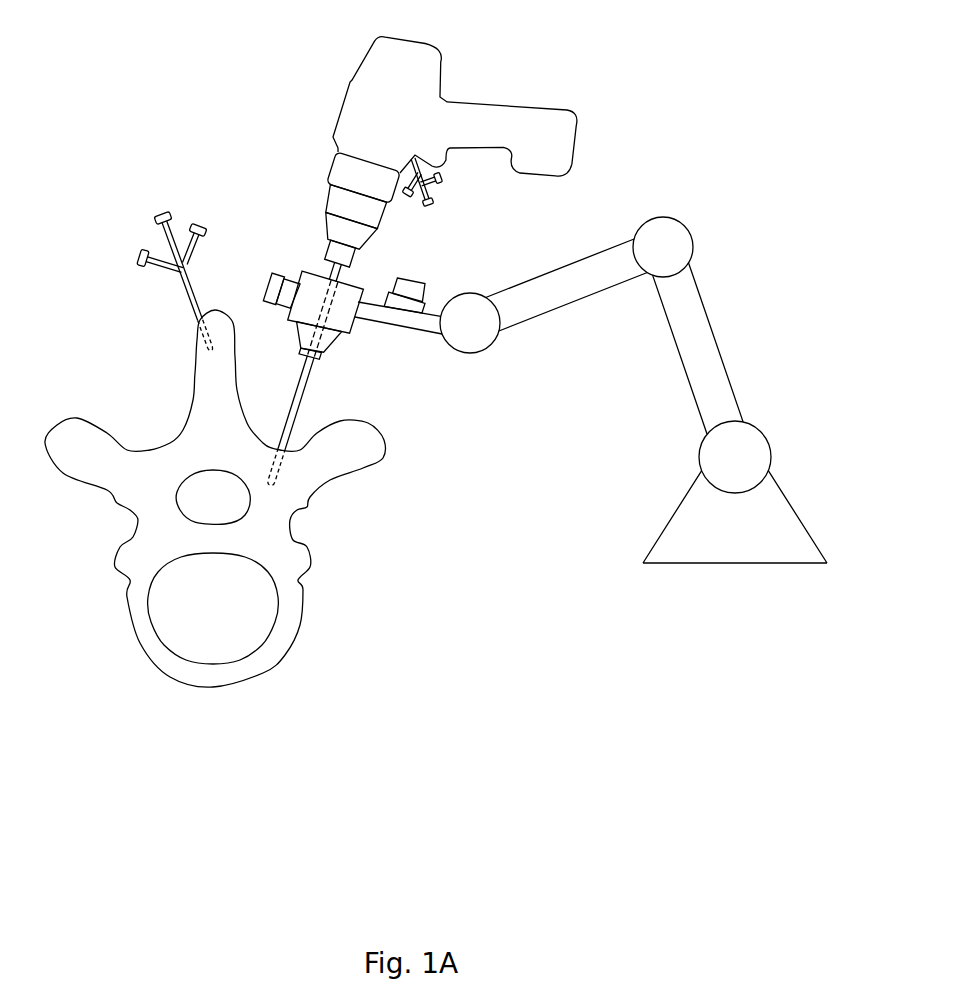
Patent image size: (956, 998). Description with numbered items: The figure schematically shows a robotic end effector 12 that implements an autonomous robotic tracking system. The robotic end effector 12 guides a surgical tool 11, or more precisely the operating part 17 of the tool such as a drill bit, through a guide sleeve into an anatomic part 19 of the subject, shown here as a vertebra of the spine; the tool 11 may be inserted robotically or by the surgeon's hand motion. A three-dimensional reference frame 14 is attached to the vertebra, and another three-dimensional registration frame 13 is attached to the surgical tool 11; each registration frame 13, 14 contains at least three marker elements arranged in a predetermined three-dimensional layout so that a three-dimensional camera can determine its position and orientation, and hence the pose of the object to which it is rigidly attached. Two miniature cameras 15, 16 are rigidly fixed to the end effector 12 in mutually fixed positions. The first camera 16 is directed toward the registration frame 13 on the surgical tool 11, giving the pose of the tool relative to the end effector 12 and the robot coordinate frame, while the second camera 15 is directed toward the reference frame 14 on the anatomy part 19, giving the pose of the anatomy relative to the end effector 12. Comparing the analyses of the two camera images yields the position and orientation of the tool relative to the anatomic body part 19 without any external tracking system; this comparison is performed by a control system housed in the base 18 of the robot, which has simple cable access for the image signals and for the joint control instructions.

The surgical tool 11 is at (567, 110).
The robotic end effector 12 is at (355, 328).
The three-dimensional registration frame 13 is at (442, 180).
The reference frame 14 is at (157, 215).
The second camera 15 is at (263, 287).
The first camera 16 is at (412, 276).
The operating part 17 is at (307, 380).
The base 18 is at (700, 563).
The anatomic part 19 is at (272, 662).